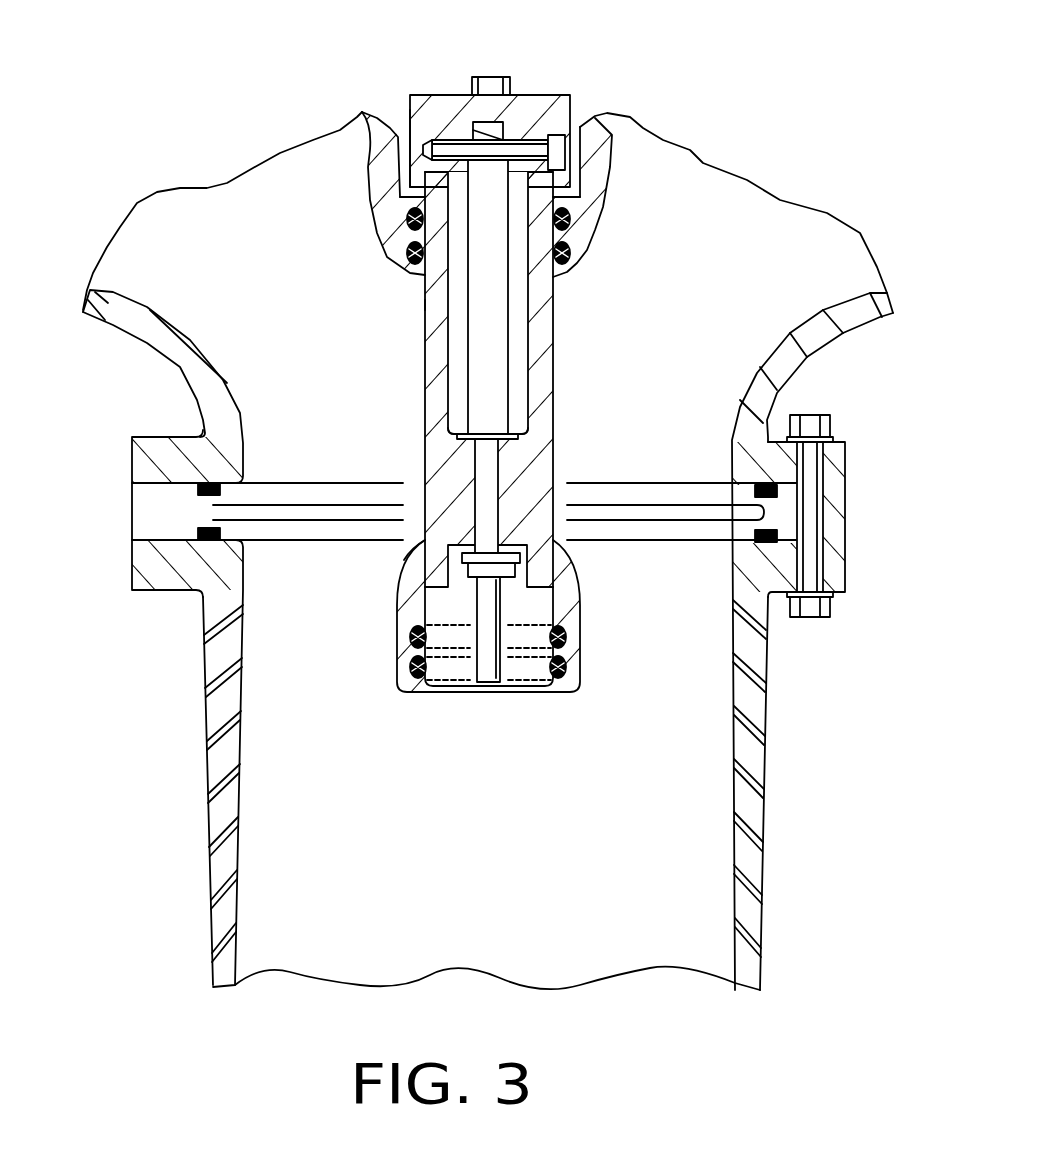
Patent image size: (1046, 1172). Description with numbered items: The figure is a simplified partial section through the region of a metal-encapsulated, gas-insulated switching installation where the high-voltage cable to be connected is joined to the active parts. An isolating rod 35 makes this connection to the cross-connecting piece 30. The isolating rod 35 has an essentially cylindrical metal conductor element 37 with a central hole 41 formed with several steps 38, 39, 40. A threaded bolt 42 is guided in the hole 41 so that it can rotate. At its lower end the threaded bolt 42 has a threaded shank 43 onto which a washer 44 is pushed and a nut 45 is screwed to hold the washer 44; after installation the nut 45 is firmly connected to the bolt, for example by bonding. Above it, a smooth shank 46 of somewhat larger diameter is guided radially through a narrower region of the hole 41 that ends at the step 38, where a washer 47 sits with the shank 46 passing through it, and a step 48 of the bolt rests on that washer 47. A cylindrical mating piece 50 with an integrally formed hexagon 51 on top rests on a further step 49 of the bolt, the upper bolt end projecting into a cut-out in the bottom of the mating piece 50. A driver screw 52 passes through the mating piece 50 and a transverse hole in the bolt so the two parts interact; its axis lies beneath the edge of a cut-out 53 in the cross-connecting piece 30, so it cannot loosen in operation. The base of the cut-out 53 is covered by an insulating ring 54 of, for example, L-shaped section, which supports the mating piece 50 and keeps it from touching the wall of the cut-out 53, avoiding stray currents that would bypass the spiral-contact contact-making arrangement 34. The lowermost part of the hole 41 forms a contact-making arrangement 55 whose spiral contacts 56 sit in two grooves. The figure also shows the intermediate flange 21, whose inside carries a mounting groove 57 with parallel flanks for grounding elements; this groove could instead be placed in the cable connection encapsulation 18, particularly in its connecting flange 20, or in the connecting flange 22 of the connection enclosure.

The cable connection encapsulation 18 is at (228, 863).
The connecting flange 20 is at (833, 570).
The intermediate flange 21 is at (833, 512).
The connecting flange 22 is at (845, 452).
The cross-connecting piece 30 is at (387, 140).
The contact-making arrangement 34 is at (570, 253).
The isolating rod 35 is at (423, 302).
The conductor element 37 is at (545, 305).
The step 38 is at (457, 434).
The step 39 is at (420, 543).
The step 40 is at (410, 600).
The central hole 41 is at (460, 385).
The threaded bolt 42 is at (490, 367).
The shank 43 is at (487, 663).
The washer 44 is at (492, 570).
The nut 45 is at (505, 575).
The shank 46 is at (487, 515).
The washer 47 is at (540, 423).
The step 48 is at (518, 398).
The step 49 is at (517, 140).
The mating piece 50 is at (430, 100).
The hexagon 51 is at (493, 80).
The driver screw 52 is at (552, 135).
The cut-out 53 is at (405, 128).
The insulating ring 54 is at (400, 195).
The contact-making arrangement 55 is at (527, 650).
The spiral contacts 56 is at (425, 640).
The mounting groove 57 is at (265, 505).